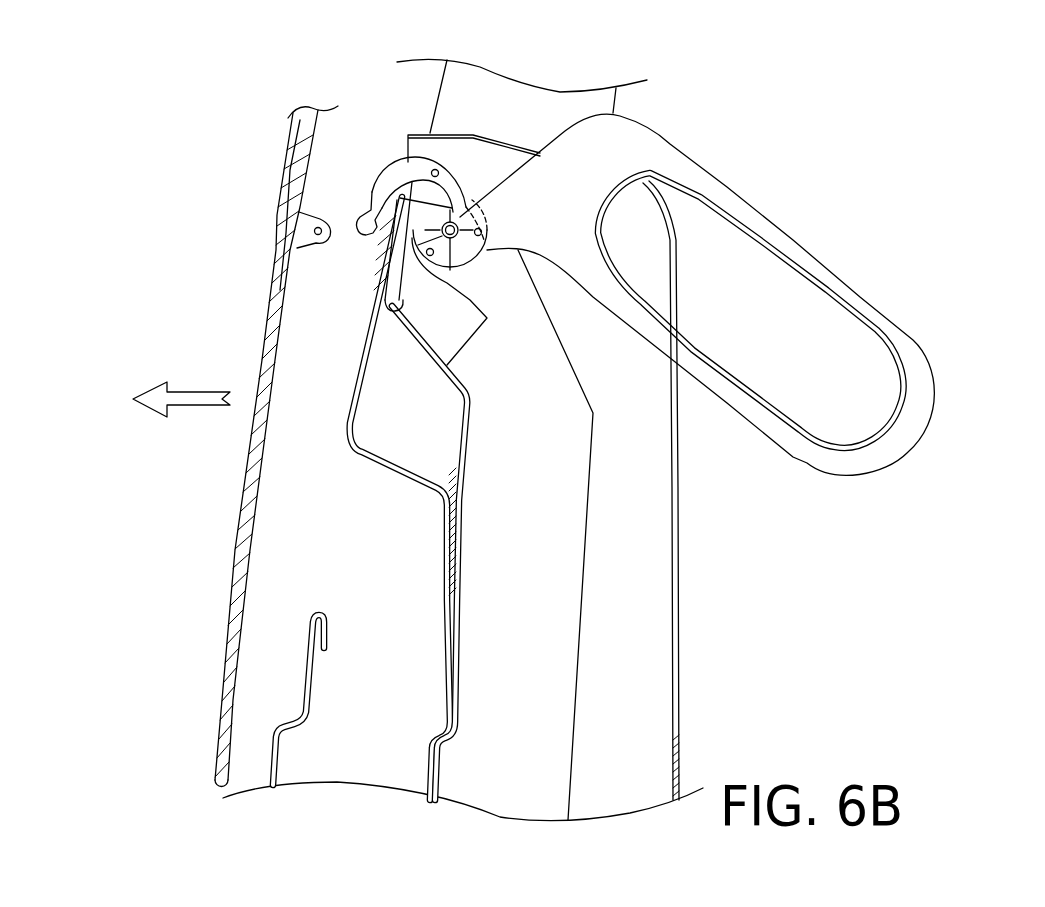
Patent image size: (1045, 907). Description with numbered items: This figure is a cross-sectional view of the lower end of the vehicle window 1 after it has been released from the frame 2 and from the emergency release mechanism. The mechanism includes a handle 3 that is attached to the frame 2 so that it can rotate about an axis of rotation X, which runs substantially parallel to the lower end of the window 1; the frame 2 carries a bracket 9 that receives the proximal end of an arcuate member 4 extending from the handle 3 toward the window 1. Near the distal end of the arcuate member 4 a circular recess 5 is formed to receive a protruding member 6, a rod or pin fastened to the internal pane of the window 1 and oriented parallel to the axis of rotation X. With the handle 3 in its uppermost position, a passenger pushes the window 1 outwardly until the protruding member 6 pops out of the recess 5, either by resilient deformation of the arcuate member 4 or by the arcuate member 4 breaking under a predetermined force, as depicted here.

The window 1 is at (267, 325).
The frame 2 is at (273, 747).
The handle 3 is at (637, 150).
The arcuate member 4 is at (451, 212).
The recess 5 is at (373, 217).
The protruding member 6 is at (328, 230).
The bracket 9 is at (397, 277).
The axis of rotation X is at (460, 217).